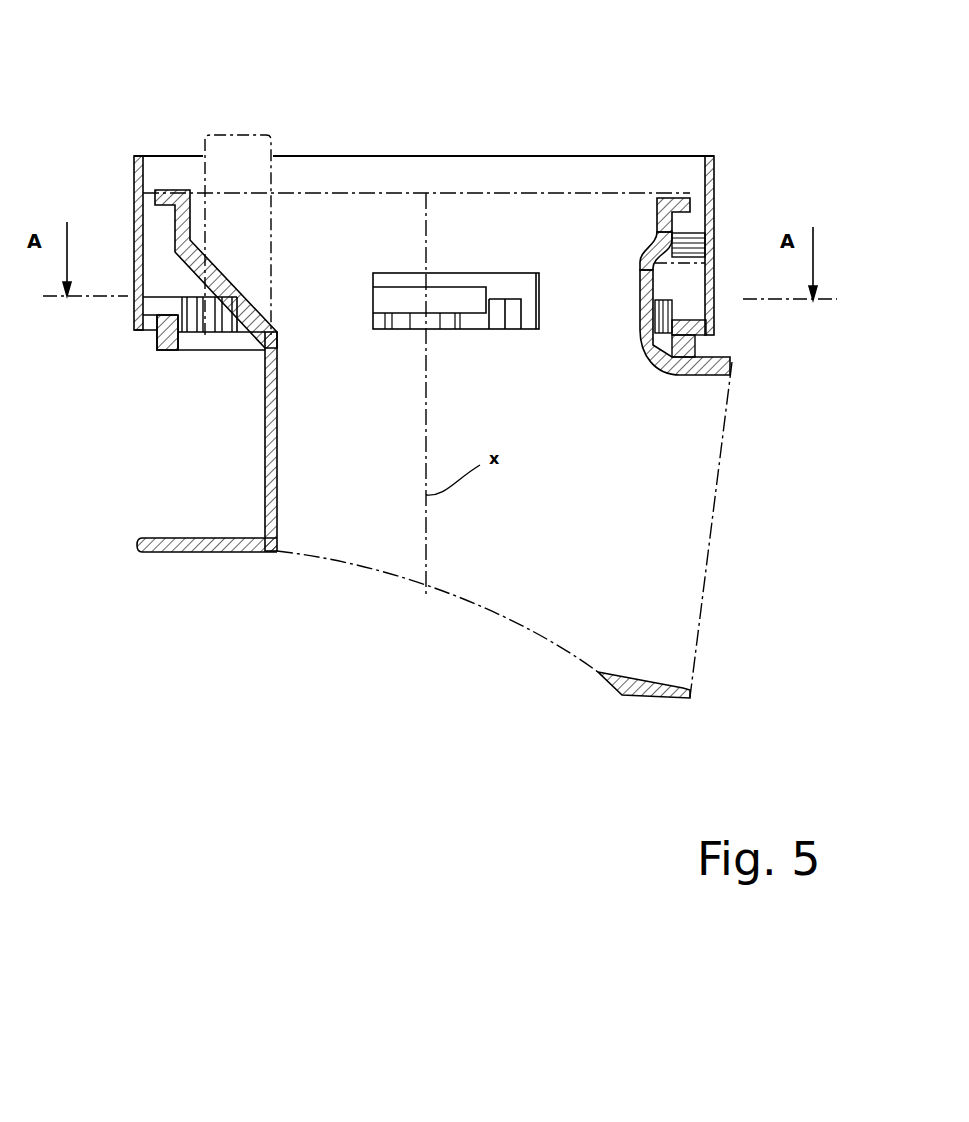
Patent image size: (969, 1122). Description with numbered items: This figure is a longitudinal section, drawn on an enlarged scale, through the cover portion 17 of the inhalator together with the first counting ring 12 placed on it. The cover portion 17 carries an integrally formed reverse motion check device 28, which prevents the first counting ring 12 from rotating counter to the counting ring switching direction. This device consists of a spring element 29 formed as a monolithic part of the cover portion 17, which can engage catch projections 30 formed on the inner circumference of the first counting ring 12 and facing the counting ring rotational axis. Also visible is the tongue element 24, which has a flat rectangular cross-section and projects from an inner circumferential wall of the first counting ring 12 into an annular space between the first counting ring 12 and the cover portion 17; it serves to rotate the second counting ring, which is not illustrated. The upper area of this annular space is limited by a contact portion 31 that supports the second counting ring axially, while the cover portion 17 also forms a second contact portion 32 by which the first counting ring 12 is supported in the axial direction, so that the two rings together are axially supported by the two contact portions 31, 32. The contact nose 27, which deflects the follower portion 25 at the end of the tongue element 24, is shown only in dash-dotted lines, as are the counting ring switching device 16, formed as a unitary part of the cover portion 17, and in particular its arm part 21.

The first counting ring 12 is at (712, 193).
The counting ring switching device 16 is at (287, 131).
The cover portion 17 is at (265, 427).
The arm part 21 is at (230, 157).
The tongue element 24 is at (697, 248).
The follower portion 25 is at (662, 233).
The contact nose 27 is at (673, 263).
The reverse motion check device 28 is at (394, 348).
The spring element 29 is at (405, 300).
The catch projections 30 is at (220, 332).
The contact portion 31 is at (690, 197).
The second contact portion 32 is at (680, 365).